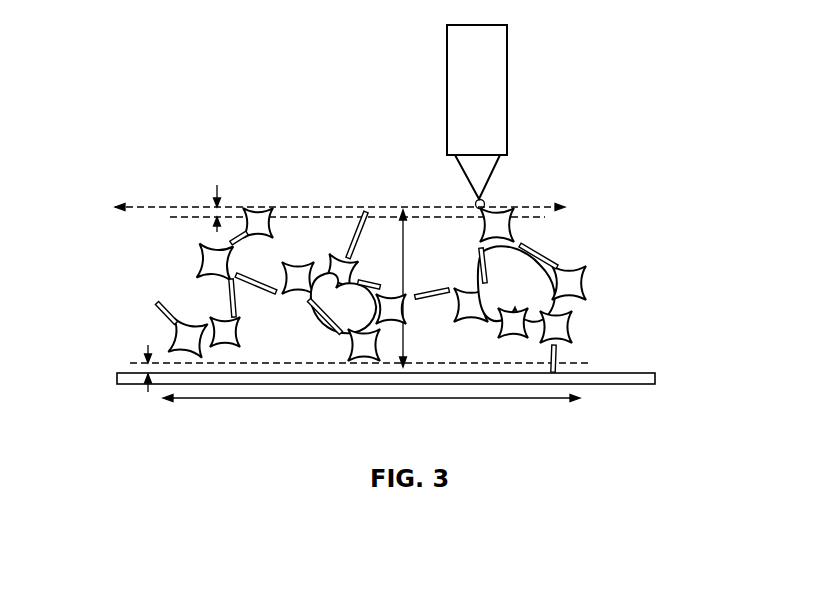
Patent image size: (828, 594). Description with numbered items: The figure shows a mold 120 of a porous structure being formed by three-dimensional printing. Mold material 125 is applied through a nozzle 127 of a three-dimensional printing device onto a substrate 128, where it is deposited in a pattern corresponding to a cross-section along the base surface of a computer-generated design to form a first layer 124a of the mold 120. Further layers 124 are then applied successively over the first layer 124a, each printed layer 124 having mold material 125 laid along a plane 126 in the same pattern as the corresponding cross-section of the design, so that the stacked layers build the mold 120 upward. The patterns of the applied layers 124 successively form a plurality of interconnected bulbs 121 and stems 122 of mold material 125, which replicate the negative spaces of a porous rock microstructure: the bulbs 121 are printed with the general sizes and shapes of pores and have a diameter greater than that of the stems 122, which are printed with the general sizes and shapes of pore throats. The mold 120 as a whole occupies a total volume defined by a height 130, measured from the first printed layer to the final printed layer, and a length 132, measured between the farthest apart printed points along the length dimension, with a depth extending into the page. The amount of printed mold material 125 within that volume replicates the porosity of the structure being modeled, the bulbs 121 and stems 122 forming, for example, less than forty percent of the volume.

The mold 120 is at (358, 286).
The bulbs 121 is at (583, 270).
The stems 122 is at (533, 249).
The layers 124 is at (357, 198).
The first layer 124a is at (352, 357).
The mold material 125 is at (485, 202).
The plane 126 is at (178, 207).
The nozzle 127 is at (507, 75).
The substrate 128 is at (610, 372).
The height 130 is at (421, 288).
The length 132 is at (371, 411).